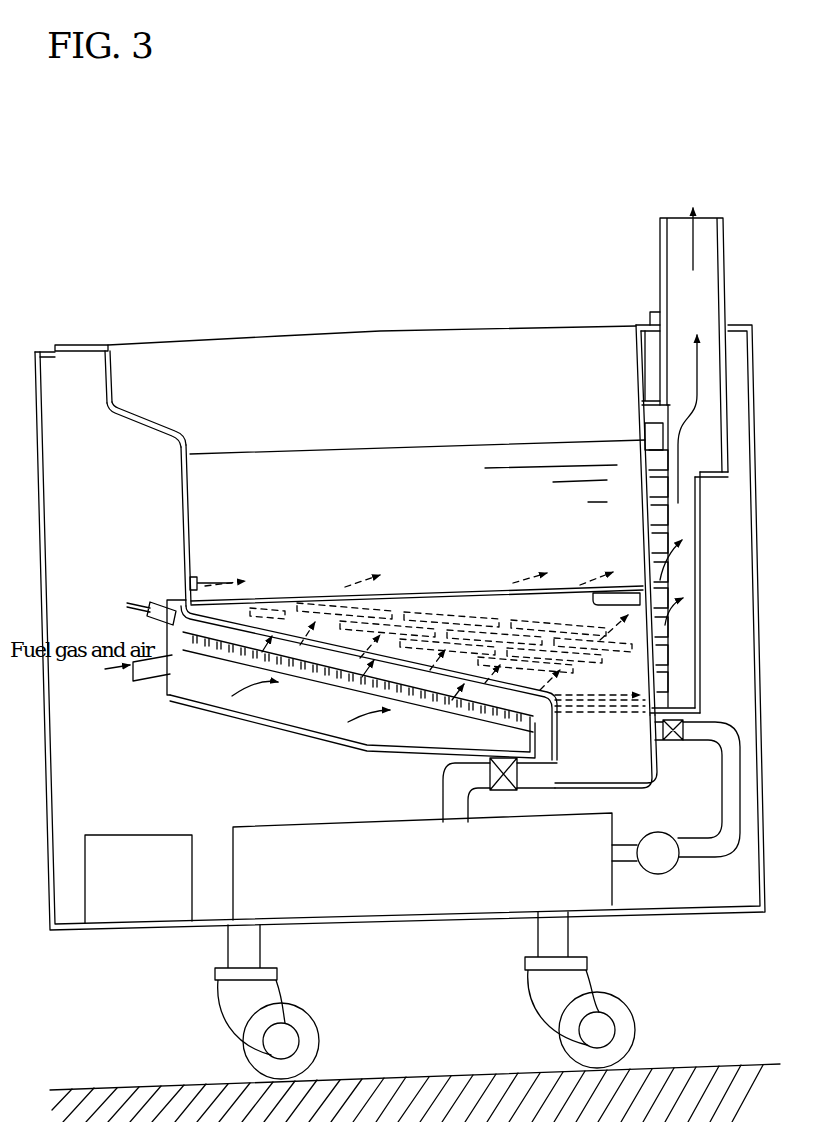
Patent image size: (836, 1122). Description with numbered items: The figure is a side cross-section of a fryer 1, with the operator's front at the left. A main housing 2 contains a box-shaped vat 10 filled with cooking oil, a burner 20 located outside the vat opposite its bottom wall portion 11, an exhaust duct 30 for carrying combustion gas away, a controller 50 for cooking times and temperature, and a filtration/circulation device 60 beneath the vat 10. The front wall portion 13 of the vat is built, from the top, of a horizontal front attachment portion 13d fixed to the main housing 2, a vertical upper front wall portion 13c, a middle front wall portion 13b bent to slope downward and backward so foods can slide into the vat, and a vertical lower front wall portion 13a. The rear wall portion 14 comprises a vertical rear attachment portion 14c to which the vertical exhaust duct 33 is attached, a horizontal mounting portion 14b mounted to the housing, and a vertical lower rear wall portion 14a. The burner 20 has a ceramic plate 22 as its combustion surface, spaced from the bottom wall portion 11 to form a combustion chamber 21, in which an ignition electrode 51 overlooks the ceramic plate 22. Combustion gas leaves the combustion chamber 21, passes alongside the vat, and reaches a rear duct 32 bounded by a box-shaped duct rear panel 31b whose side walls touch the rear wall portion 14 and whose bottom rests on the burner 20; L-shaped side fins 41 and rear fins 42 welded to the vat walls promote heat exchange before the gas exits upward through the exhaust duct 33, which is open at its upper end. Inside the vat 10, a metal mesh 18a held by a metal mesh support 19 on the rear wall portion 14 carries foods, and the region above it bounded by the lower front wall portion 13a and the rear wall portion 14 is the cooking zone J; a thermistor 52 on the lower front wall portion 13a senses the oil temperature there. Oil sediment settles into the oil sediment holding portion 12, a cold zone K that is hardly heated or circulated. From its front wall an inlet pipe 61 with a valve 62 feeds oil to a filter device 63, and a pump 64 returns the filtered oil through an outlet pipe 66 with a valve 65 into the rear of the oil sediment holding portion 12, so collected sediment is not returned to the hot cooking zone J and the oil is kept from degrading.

The fryer 1 is at (386, 322).
The main housing 2 is at (38, 380).
The vat 10 is at (96, 367).
The bottom wall portion 11 is at (305, 654).
The oil sediment holding portion 12 is at (655, 765).
The front wall portion 13 is at (119, 444).
The lower front wall portion 13a is at (183, 492).
The middle front wall portion 13b is at (150, 428).
The upper front wall portion 13c is at (106, 406).
The front attachment portion 13d is at (80, 346).
The rear wall portion 14 is at (588, 482).
The lower rear wall portion 14a is at (640, 362).
The mounting portion 14b is at (655, 325).
The rear attachment portion 14c is at (660, 315).
The metal mesh 18a is at (477, 588).
The metal mesh support 19 is at (630, 592).
The burner 20 is at (342, 680).
The combustion chamber 21 is at (335, 660).
The ceramic plate 22 is at (425, 695).
The exhaust duct 30 is at (697, 592).
The duct rear panel 31b is at (630, 718).
The rear duct 32 is at (702, 608).
The exhaust duct 33 is at (723, 270).
The side fins 41 is at (395, 585).
The rear fins 42 is at (668, 655).
The controller 50 is at (148, 834).
The ignition electrode 51 is at (150, 606).
The thermistor 52 is at (200, 578).
The filtration/circulation device 60 is at (486, 820).
The inlet pipe 61 is at (545, 775).
The valve 62 is at (505, 790).
The filter device 63 is at (405, 818).
The pump 64 is at (650, 835).
The valve 65 is at (678, 742).
The outlet pipe 66 is at (660, 748).
The cooking zone J is at (498, 508).
The cold zone K is at (635, 760).